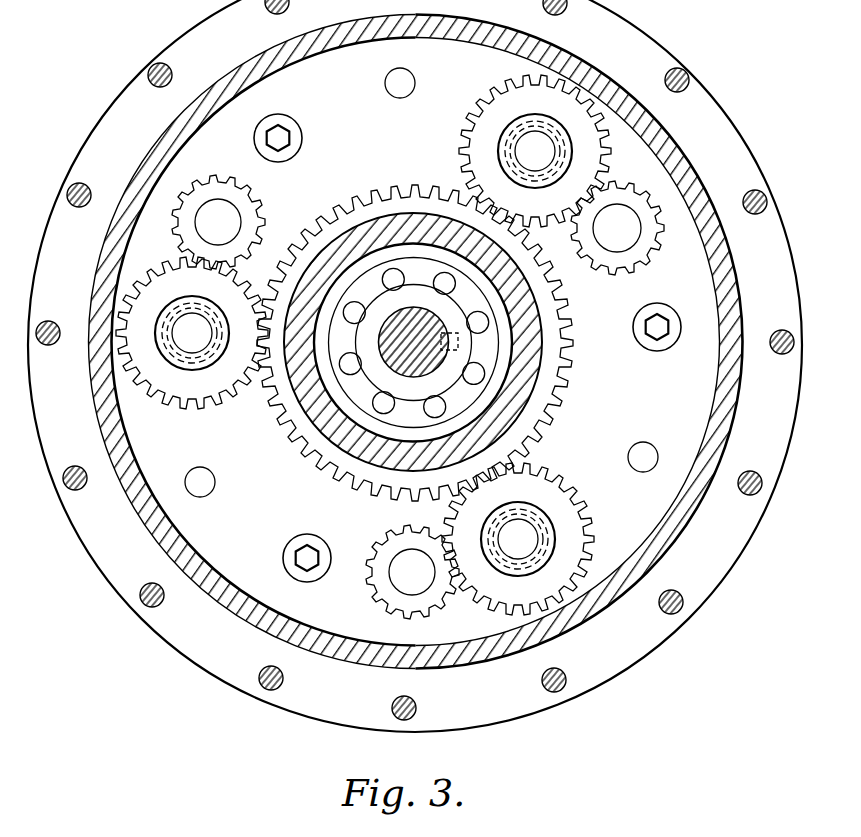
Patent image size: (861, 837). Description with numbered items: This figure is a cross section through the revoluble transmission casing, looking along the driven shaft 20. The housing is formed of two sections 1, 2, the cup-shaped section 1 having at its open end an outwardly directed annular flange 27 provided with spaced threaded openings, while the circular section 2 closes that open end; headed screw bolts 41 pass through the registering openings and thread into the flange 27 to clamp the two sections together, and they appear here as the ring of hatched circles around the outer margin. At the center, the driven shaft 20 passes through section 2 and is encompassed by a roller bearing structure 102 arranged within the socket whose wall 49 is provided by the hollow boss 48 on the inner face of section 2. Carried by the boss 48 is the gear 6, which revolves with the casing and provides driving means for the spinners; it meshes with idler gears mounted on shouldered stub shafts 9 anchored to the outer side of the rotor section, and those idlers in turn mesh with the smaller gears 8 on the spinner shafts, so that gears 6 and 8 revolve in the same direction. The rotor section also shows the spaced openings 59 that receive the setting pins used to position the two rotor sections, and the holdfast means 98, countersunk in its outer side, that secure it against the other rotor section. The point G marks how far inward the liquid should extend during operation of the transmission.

The casing section 1 is at (603, 157).
The casing section 2 is at (690, 522).
The gear 6 is at (565, 316).
The gear 8 is at (256, 216).
The stub shaft 9 is at (523, 147).
The driven shaft 20 is at (408, 318).
The annular flange 27 is at (720, 125).
The headed screw bolt 41 is at (680, 72).
The hollow boss 48 is at (530, 347).
The socket wall 49 is at (337, 421).
The opening 59 is at (415, 82).
The holdfast means 98 is at (660, 332).
The roller bearing structure 102 is at (360, 380).
The liquid level point G is at (618, 128).